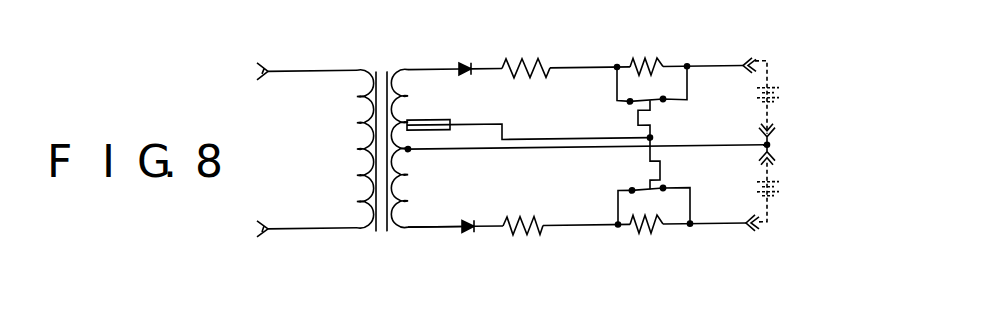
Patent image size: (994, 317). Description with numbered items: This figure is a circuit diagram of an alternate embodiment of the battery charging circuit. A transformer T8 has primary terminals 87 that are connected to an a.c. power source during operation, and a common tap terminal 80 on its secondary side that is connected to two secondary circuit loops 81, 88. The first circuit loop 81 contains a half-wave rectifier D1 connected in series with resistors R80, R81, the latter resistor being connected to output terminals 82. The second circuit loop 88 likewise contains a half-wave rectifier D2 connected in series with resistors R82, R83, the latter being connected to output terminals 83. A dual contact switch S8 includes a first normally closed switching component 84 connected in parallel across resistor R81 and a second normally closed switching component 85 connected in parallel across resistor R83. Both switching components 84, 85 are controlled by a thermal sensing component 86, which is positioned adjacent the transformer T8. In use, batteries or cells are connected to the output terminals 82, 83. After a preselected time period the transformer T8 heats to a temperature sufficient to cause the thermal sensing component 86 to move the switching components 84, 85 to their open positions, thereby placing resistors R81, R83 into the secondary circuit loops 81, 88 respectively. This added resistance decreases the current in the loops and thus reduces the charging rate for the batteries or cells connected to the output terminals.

The primary terminals 87 is at (262, 79).
The transformer T8 is at (385, 128).
The first circuit loop 81 is at (428, 86).
The half-wave rectifier D1 is at (461, 63).
The resistor R80 is at (528, 57).
The resistor R81 is at (640, 53).
The output terminals 82 is at (756, 62).
The thermal sensing component 86 is at (427, 119).
The first normally closed switching component 84 is at (625, 105).
The dual contact switch S8 is at (666, 187).
The output terminals 83 is at (775, 161).
The common tap terminal 80 is at (409, 150).
The second normally closed switching component 85 is at (631, 191).
The second circuit loop 88 is at (433, 209).
The half-wave rectifier D2 is at (467, 220).
The resistor R82 is at (524, 236).
The resistor R83 is at (648, 236).